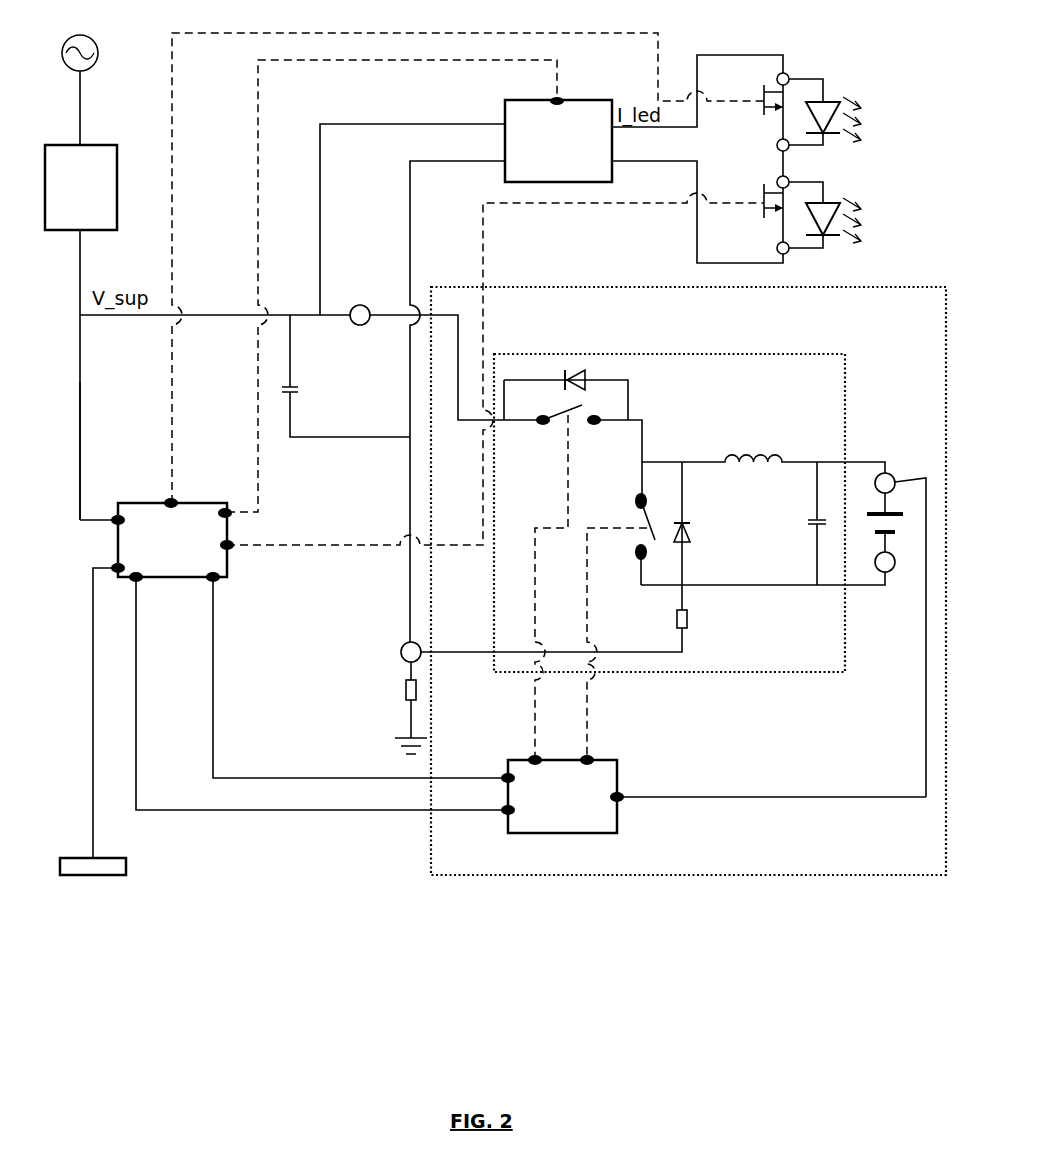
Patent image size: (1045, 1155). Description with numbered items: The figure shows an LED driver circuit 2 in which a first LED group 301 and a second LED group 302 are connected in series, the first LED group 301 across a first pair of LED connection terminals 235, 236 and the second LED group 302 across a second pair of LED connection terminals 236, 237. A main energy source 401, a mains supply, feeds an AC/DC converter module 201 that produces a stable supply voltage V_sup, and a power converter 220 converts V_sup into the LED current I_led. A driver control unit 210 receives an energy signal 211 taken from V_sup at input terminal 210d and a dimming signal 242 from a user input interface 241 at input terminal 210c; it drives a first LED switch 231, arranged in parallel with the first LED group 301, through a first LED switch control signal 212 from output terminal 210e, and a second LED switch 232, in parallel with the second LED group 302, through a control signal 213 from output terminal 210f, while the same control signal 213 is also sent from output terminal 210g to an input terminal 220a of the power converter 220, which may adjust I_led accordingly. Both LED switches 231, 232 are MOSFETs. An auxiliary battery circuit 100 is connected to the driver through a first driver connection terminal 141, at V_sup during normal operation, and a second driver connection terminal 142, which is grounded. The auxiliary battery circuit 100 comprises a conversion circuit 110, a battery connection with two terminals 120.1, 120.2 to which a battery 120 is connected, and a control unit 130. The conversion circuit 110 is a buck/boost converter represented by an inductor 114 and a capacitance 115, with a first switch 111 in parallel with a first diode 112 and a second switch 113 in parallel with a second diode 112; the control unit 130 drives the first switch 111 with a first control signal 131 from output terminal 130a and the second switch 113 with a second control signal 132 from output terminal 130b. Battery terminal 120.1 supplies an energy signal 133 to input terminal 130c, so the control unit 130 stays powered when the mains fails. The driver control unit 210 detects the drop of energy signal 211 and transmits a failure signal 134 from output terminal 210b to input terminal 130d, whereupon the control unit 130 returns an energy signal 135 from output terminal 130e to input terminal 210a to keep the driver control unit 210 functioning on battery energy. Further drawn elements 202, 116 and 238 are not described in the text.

The main energy source 401 is at (100, 50).
The AC/DC converter module 201 is at (81, 187).
The first LED switch control signal 212 is at (173, 337).
The energy signal 211 is at (80, 382).
The control signal 213 is at (258, 385).
The buffer capacitor 202 is at (300, 387).
The power converter 220 is at (558, 141).
The input terminal of power converter 220a is at (563, 99).
The LED connection terminal 235 is at (786, 74).
The first LED switch 231 is at (760, 108).
The first LED group 301 is at (830, 100).
The LED connection terminal 236 is at (777, 142).
The LED connection terminal 237 is at (790, 176).
The second LED switch 232 is at (762, 212).
The second LED group 302 is at (832, 200).
The terminal 238 is at (786, 254).
The first driver connection terminal 141 is at (368, 307).
The auxiliary battery circuit 100 is at (710, 875).
The conversion circuit 110 is at (795, 673).
The first switch 111 is at (557, 427).
The diode 112 is at (577, 368).
The first control signal 131 is at (538, 558).
The second control signal 132 is at (588, 588).
The second switch 113 is at (648, 530).
The inductor 114 is at (727, 452).
The capacitance 115 is at (803, 523).
The sense resistor 116 is at (688, 627).
The second driver connection terminal 142 is at (400, 650).
The battery 120 is at (877, 513).
The battery connection terminal 120.1 is at (897, 482).
The battery connection terminal 120.2 is at (897, 562).
The control unit 130 is at (562, 796).
The output terminal 130a is at (530, 760).
The output terminal 130b is at (590, 758).
The input terminal 130c is at (617, 797).
The input terminal 130d is at (508, 812).
The output terminal 130e is at (507, 777).
The energy signal 133 is at (830, 798).
The failure signal 134 is at (237, 815).
The energy signal 135 is at (327, 777).
The driver control unit 210 is at (172, 540).
The input terminal 210a is at (210, 580).
The output terminal 210b is at (138, 580).
The input terminal 210c is at (115, 567).
The input terminal 210d is at (115, 523).
The output terminal 210e is at (168, 502).
The output terminal 210f is at (233, 547).
The output terminal 210g is at (230, 510).
The dimming signal 242 is at (92, 718).
The user input interface 241 is at (110, 870).
The LED driver circuit 2 is at (276, 918).